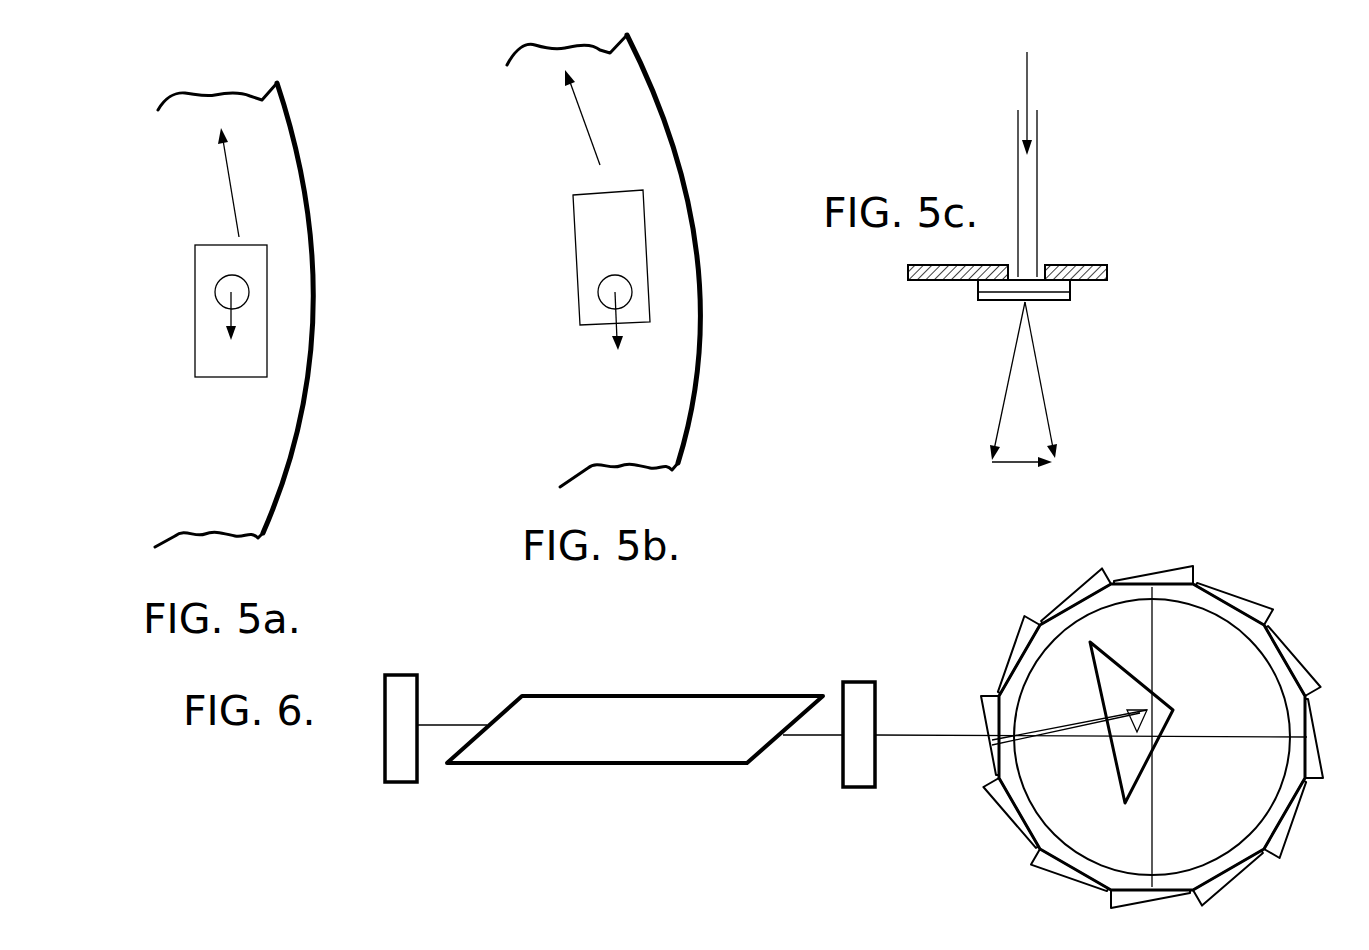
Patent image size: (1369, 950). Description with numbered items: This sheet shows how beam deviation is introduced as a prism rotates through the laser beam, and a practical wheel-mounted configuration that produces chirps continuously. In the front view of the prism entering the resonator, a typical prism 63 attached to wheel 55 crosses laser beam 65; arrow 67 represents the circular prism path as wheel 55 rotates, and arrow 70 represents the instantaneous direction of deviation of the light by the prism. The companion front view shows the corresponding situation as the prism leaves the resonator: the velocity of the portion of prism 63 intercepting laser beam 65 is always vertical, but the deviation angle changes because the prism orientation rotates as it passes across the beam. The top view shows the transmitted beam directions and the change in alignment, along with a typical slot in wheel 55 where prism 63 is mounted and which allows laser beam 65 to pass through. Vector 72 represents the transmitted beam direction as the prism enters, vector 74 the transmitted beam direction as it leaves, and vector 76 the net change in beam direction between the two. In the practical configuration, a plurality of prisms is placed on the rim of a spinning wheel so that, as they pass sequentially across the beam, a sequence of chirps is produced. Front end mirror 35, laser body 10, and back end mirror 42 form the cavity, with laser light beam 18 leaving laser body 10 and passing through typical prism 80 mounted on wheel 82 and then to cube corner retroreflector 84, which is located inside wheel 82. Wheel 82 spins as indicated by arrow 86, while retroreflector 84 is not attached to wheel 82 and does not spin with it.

In FIG. 6, the laser body 10 is at (695, 765).
In FIG. 6, the laser light beam 18 is at (450, 725).
In FIG. 6, the front end mirror 35 is at (417, 675).
In FIG. 6, the back end mirror 42 is at (843, 787).
In FIG. 5A, the wheel 55 is at (308, 195).
In FIG. 5B, the wheel 55 is at (672, 108).
In FIG. 5C, the wheel 55 is at (1075, 268).
In FIG. 5A, the prism 63 is at (178, 362).
In FIG. 5B, the prism 63 is at (578, 328).
In FIG. 5C, the prism 63 is at (1052, 300).
In FIG. 5A, the laser beam 65 is at (220, 282).
In FIG. 5B, the laser beam 65 is at (600, 282).
In FIG. 5C, the laser beam 65 is at (1027, 78).
In FIG. 5A, the arrow representing circular prism path 67 is at (240, 208).
In FIG. 5B, the arrow representing circular prism path 67 is at (583, 108).
In FIG. 5A, the arrow representing instantaneous direction of deviation 70 is at (228, 310).
In FIG. 5B, the arrow representing instantaneous direction of deviation 70 is at (612, 312).
In FIG. 5C, the vector of transmitted laser beam direction 72 is at (1005, 385).
In FIG. 5C, the vector of transmitted laser beam direction 74 is at (1043, 387).
In FIG. 5C, the net change in beam direction vector 76 is at (1018, 465).
In FIG. 6, the prism 80 is at (985, 712).
In FIG. 6, the wheel 82 is at (1025, 790).
In FIG. 6, the cube corner retroreflector 84 is at (1135, 678).
In FIG. 6, the arrow indicating wheel spin 86 is at (995, 625).